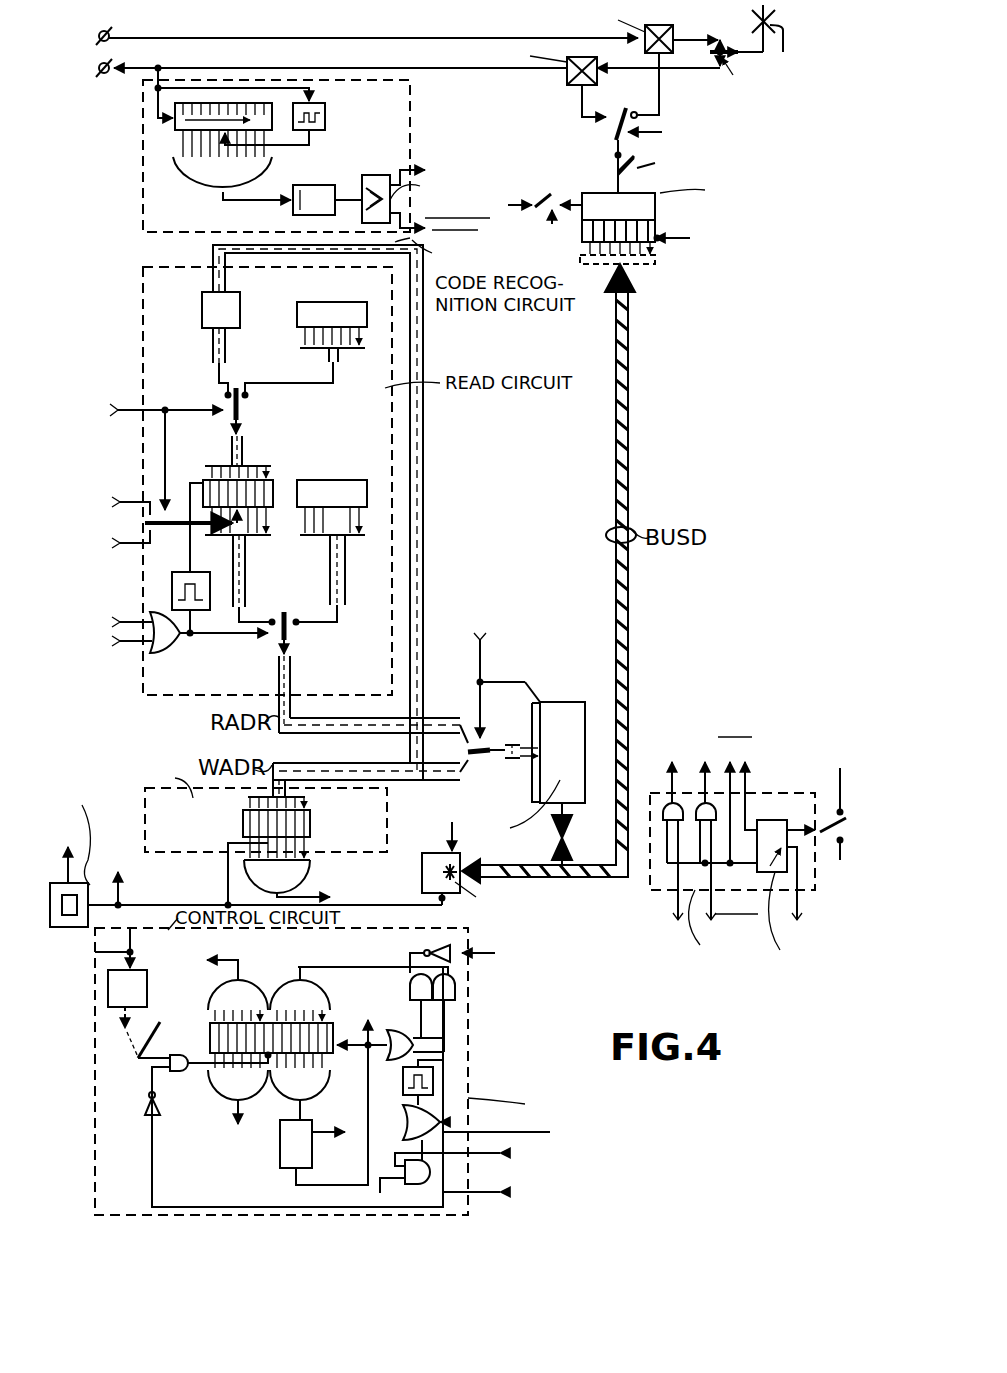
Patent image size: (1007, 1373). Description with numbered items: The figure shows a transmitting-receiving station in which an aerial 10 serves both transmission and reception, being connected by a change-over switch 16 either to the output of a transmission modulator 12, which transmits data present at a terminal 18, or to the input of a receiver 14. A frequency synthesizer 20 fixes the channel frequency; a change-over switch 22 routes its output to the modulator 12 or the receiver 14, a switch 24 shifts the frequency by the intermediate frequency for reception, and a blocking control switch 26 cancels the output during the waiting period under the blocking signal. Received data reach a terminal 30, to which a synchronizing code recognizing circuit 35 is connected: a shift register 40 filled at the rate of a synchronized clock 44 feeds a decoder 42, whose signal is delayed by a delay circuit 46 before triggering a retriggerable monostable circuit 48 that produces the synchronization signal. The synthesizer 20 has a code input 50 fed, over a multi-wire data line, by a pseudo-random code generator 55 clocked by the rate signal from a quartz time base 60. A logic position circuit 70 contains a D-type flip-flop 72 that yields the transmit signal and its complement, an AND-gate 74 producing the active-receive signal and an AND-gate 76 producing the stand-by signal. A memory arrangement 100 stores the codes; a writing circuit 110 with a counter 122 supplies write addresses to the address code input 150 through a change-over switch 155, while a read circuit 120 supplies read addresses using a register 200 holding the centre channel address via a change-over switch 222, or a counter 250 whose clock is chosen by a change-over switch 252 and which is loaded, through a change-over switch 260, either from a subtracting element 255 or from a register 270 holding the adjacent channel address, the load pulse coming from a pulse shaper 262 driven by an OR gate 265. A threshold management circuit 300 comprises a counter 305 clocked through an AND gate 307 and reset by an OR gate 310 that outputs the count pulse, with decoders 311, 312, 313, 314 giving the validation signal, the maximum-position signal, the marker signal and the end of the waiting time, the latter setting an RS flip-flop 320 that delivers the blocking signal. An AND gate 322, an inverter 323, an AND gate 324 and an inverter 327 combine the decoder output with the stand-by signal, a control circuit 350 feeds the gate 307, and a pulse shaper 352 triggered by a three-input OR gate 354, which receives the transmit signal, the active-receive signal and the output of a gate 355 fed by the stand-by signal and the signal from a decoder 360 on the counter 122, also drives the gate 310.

The aerial 10 is at (778, 45).
The transmission modulator 12 is at (650, 54).
The receiver 14 is at (567, 72).
The change-over switch 16 is at (742, 60).
The terminal 18 is at (110, 42).
The frequency synthesizer 20 is at (658, 202).
The change-over switch 22 is at (608, 120).
The switch 24 is at (540, 175).
The blocking control switch 26 is at (616, 170).
The terminal 30 is at (331, 86).
The synchronizing code recognizing circuit 35 is at (410, 122).
The shift register 40 is at (175, 125).
The decoder 42 is at (192, 166).
The synchronized clock 44 is at (325, 122).
The delay circuit 46 is at (310, 185).
The retriggerable monostable circuit 48 is at (376, 175).
The code input 50 is at (650, 265).
The code generator 55 is at (428, 855).
The quartz time base 60 is at (100, 870).
The logic position circuit 70 is at (805, 793).
The D-type flip-flop 72 is at (770, 825).
The AND-gate 74 is at (663, 808).
The AND-gate 76 is at (690, 812).
The memory arrangement 100 is at (545, 705).
The writing circuit 110 is at (145, 812).
The read circuit 120 is at (143, 400).
The counter 122 is at (310, 822).
The address code input 150 is at (495, 765).
The change-over switch 155 is at (508, 730).
The register 200 is at (360, 458).
The change-over switch 222 is at (287, 635).
The counter 250 is at (273, 495).
The change-over switch 252 is at (183, 495).
The subtracting element 255 is at (202, 318).
The change-over switch 260 is at (240, 412).
The pulse shaper 262 is at (170, 585).
The OR gate 265 is at (168, 648).
The register 270 is at (297, 312).
The threshold management circuit 300 is at (95, 1110).
The counter 305 is at (343, 1025).
The AND gate 307 is at (190, 1082).
The OR gate 310 is at (443, 1047).
The decoder 311 is at (208, 995).
The decoder 312 is at (283, 990).
The decoder 313 is at (215, 1095).
The decoder 314 is at (322, 1092).
The RS flip-flop 320 is at (280, 1148).
The AND gate 322 is at (455, 1015).
The logic signal inverter 323 is at (415, 948).
The AND gate 324 is at (432, 990).
The logic signal inverter 327 is at (140, 1115).
The control circuit 350 is at (108, 990).
The pulse shaper 352 is at (433, 1080).
The three-input OR gate 354 is at (440, 1112).
The gate 355 is at (400, 1175).
The decoder 360 is at (300, 865).